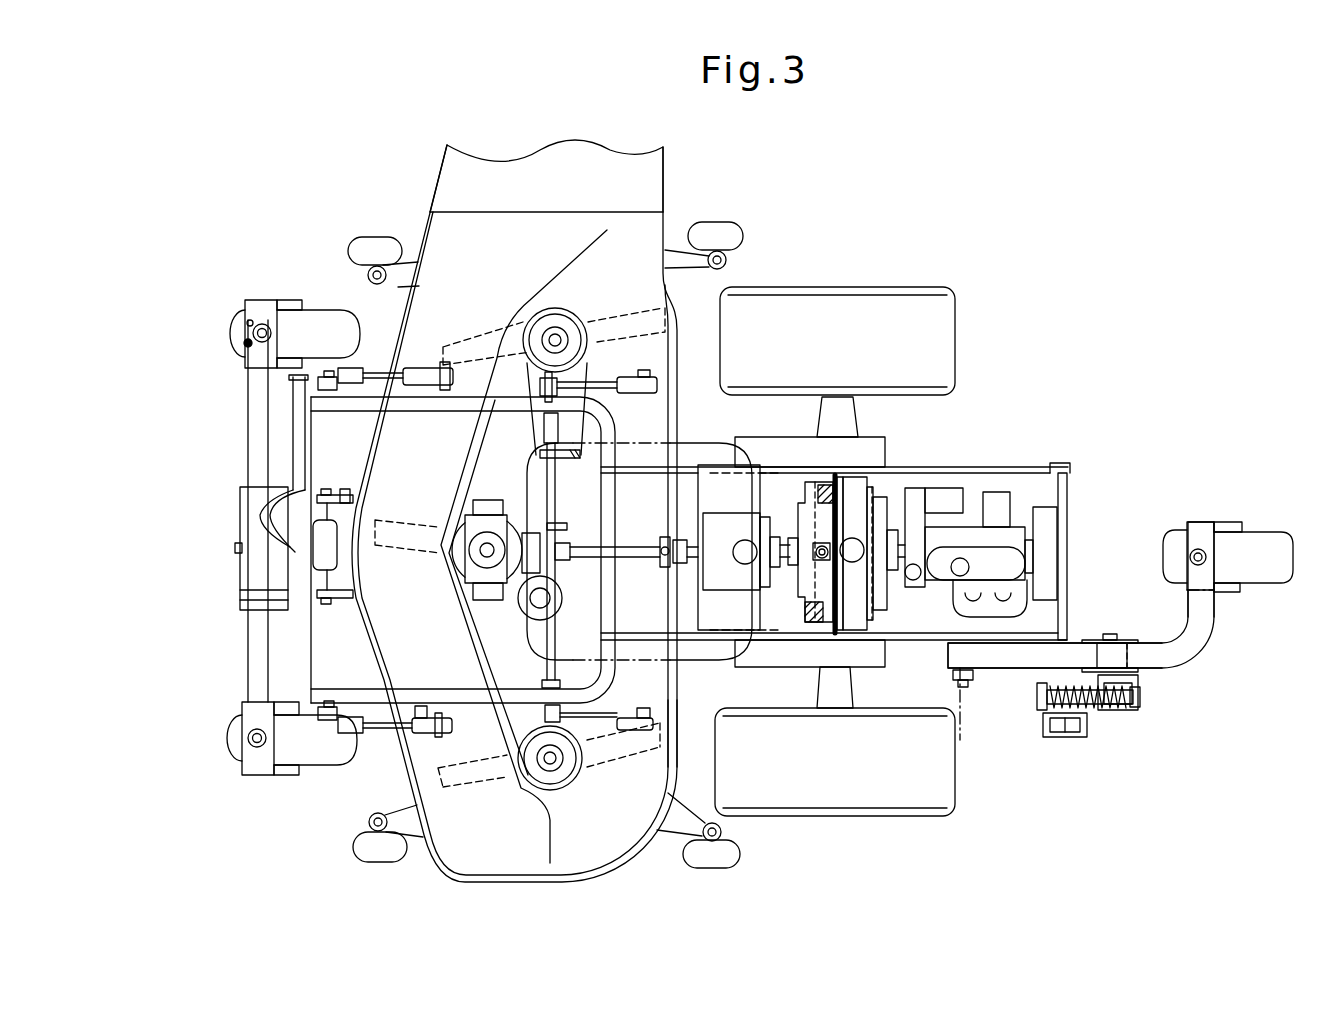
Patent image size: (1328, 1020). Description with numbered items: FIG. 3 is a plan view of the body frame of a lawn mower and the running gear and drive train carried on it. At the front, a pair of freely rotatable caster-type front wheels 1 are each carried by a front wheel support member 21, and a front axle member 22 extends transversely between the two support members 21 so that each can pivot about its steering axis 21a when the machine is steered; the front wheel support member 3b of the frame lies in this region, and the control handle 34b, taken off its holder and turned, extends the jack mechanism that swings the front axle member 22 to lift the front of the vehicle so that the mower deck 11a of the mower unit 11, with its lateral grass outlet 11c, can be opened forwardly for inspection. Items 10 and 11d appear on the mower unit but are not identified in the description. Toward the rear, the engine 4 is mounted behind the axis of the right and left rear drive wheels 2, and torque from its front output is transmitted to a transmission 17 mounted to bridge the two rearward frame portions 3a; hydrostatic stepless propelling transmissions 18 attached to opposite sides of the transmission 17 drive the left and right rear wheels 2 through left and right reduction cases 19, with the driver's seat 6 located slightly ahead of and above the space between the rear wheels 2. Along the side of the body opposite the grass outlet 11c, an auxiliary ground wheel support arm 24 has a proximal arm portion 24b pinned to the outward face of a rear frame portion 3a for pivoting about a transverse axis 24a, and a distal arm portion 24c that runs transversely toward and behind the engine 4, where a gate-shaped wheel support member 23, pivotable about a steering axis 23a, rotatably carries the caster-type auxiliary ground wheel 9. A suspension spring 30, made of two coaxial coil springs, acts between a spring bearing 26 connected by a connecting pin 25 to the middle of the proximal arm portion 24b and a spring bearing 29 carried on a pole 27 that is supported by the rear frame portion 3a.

The front wheel 1 is at (230, 333).
The rear drive wheel 2 is at (893, 290).
The rearward portion of the body frame 3a is at (973, 467).
The front wheel support member 3b is at (452, 407).
The engine 4 is at (943, 567).
The driver's seat 6 is at (693, 660).
The auxiliary ground wheel 9 is at (1257, 540).
The link rod 10 is at (407, 370).
The mower unit 11 is at (420, 231).
The mower deck 11a is at (657, 763).
The grass outlet 11c is at (531, 209).
The gauge wheel bracket 11d is at (360, 240).
The transmission 17 is at (698, 523).
The hydrostatic stepless propelling transmission 18 is at (721, 482).
The reduction case 19 is at (763, 443).
The front wheel support member 21 is at (258, 303).
The steering axis 21a is at (264, 324).
The front axle member 22 is at (250, 630).
The wheel support member 23 is at (1200, 525).
The steering axis 23a is at (1190, 557).
The auxiliary ground wheel support arm 24 is at (1210, 639).
The transverse axis 24a is at (960, 725).
The proximal arm portion 24b is at (1070, 650).
The distal arm portion 24c is at (1200, 603).
The connecting pin 25 is at (1110, 635).
The spring bearing 26 is at (1140, 685).
The pole 27 is at (1088, 728).
The spring bearing 29 is at (1035, 693).
The suspension spring 30 is at (1102, 714).
The control handle 34b is at (295, 452).